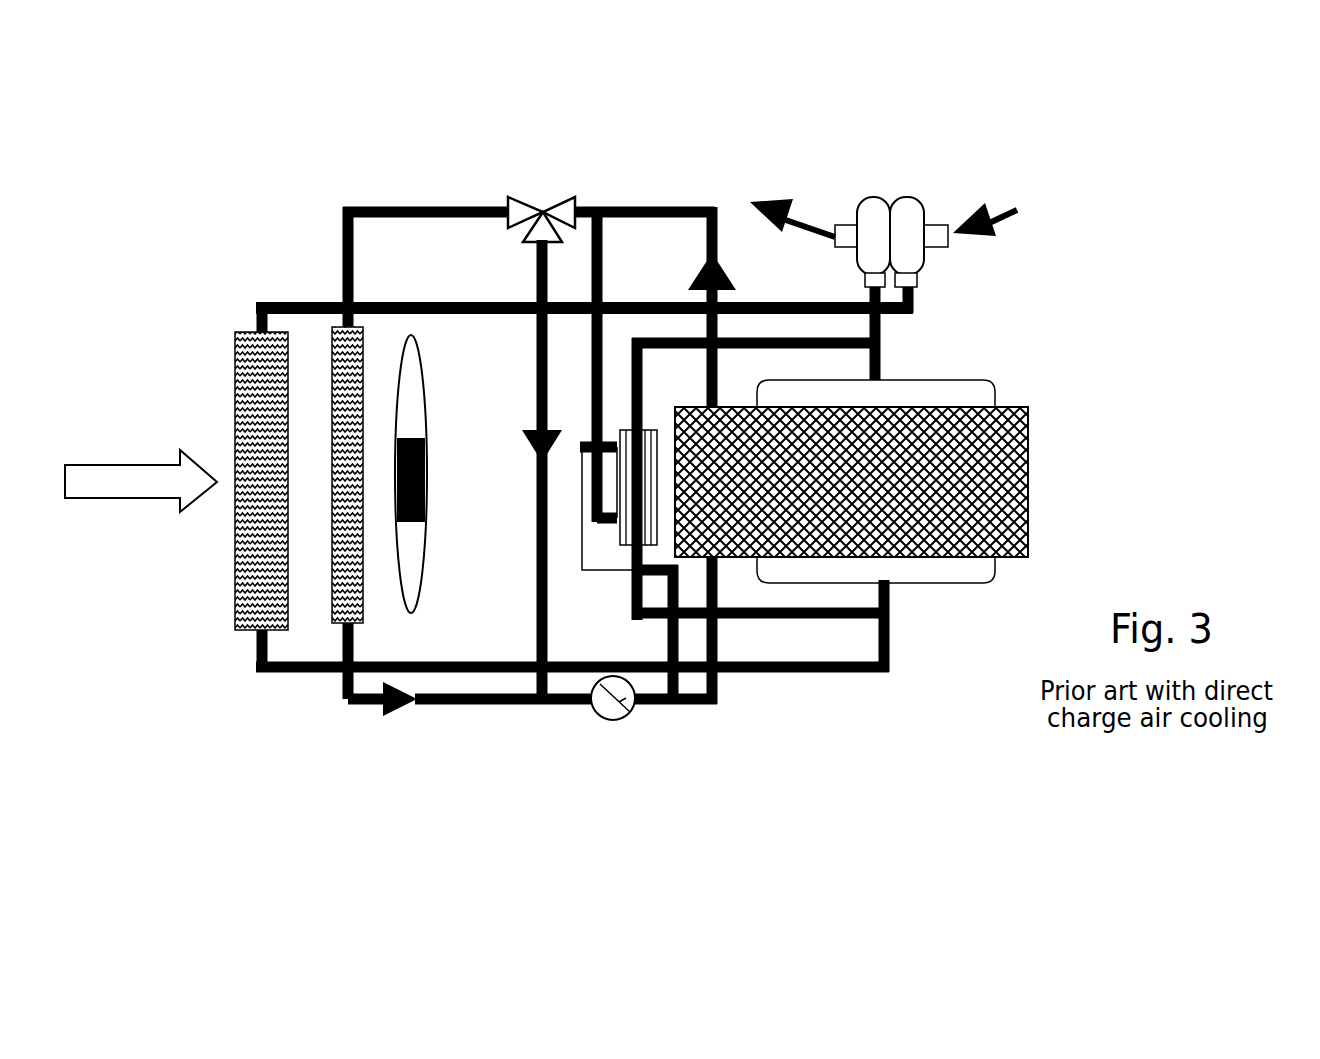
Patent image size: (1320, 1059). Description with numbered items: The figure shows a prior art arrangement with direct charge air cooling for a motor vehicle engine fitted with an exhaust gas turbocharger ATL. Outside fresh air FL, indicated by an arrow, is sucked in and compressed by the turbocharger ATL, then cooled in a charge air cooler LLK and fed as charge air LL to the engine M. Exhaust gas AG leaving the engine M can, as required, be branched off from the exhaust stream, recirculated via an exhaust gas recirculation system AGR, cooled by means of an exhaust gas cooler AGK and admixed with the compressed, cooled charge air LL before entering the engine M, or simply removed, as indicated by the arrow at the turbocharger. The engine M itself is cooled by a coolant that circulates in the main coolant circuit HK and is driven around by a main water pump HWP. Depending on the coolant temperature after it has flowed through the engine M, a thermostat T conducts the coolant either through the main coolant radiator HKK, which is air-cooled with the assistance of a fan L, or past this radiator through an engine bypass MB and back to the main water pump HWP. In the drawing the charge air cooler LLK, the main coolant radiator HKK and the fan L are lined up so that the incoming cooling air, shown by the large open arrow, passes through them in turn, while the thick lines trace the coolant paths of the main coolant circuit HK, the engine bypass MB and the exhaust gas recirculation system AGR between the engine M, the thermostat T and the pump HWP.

The thermostat T is at (547, 209).
The main coolant circuit HK is at (697, 210).
The exhaust gas AG is at (807, 225).
The exhaust gas turbocharger ATL is at (907, 222).
The fresh air FL is at (995, 208).
The charge air LL is at (307, 302).
The charge air cooler LLK is at (263, 395).
The engine bypass MB is at (535, 347).
The engine M is at (965, 455).
The main coolant radiator HKK is at (330, 508).
The fan L is at (415, 582).
The exhaust gas recirculation system AGR is at (802, 620).
The exhaust gas cooler AGK is at (617, 523).
The main water pump HWP is at (622, 706).